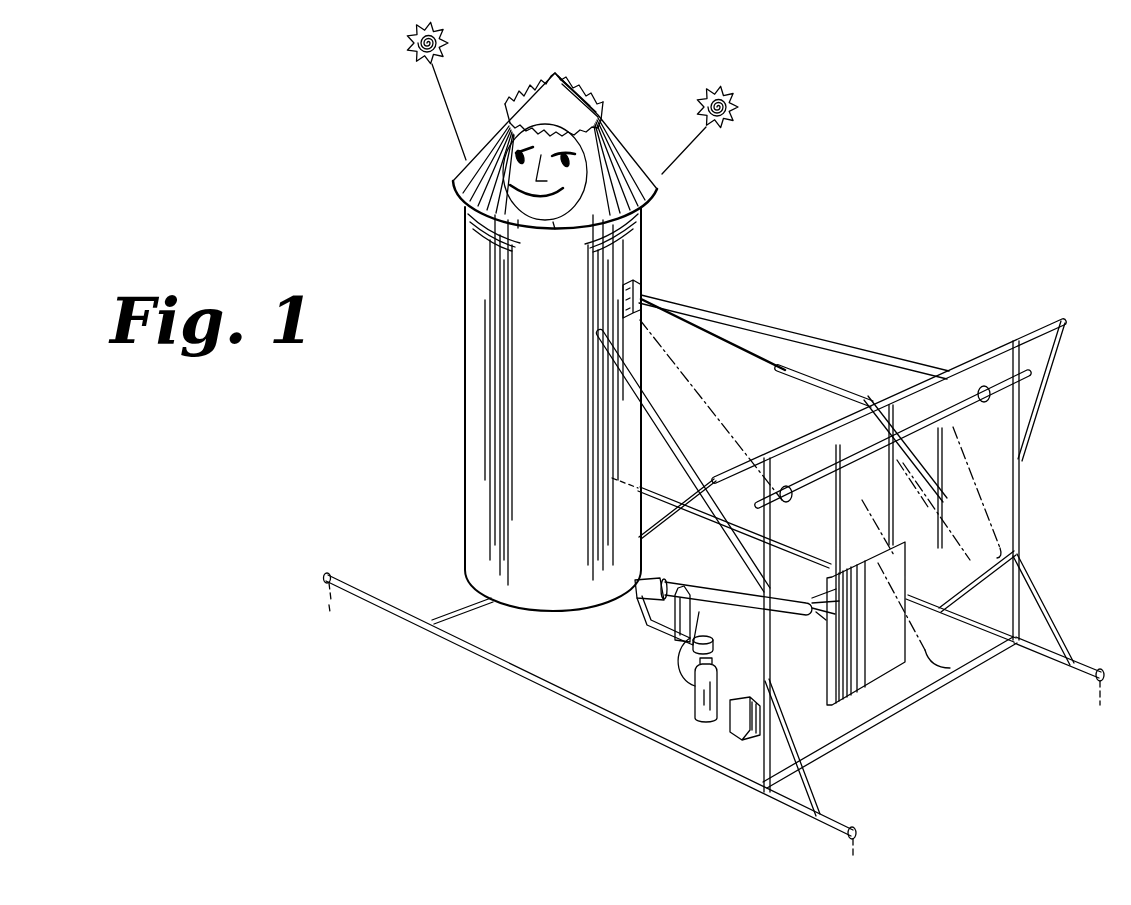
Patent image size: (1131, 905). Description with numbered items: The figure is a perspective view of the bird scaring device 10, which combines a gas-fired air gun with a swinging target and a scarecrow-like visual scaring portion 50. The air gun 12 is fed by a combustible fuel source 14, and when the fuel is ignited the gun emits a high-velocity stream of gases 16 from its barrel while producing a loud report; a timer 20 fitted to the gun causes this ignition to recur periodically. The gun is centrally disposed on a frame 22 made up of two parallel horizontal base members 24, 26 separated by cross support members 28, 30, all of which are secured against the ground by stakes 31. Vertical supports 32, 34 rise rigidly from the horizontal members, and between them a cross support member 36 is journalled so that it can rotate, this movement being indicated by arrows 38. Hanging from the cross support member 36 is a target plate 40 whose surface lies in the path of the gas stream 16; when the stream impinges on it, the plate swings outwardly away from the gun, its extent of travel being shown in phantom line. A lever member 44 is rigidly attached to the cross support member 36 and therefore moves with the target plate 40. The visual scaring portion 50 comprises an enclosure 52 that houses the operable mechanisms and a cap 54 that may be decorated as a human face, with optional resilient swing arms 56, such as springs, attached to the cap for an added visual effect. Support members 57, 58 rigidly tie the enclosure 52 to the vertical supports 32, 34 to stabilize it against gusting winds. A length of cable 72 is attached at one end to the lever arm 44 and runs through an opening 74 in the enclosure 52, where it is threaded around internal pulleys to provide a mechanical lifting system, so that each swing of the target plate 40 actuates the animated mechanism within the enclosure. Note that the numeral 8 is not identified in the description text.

The bird scaring device 10 is at (900, 70).
The spray barrel 8 is at (741, 605).
The air gun 12 is at (690, 592).
The combustible fuel source 14 is at (695, 687).
The stream of gases 16 is at (807, 598).
The timer 20 is at (698, 750).
The frame 22 is at (545, 746).
The horizontal base member 24 is at (475, 660).
The horizontal base member 26 is at (670, 500).
The cross support member 28 is at (450, 602).
The cross support member 30 is at (855, 741).
The stakes 31 is at (333, 574).
The vertical support 32 is at (771, 681).
The vertical support 34 is at (1021, 496).
The cross support member 36 is at (957, 450).
The arrows 38 is at (983, 398).
The target plate 40 is at (900, 656).
The lever member 44 is at (805, 440).
The animate visual scaring portion 50 is at (418, 414).
The enclosure 52 is at (578, 443).
The cap 54 is at (453, 182).
The swing arms 56 is at (430, 62).
The support member 57 is at (698, 440).
The support member 58 is at (742, 322).
The cable 72 is at (743, 358).
The opening 74 is at (622, 298).